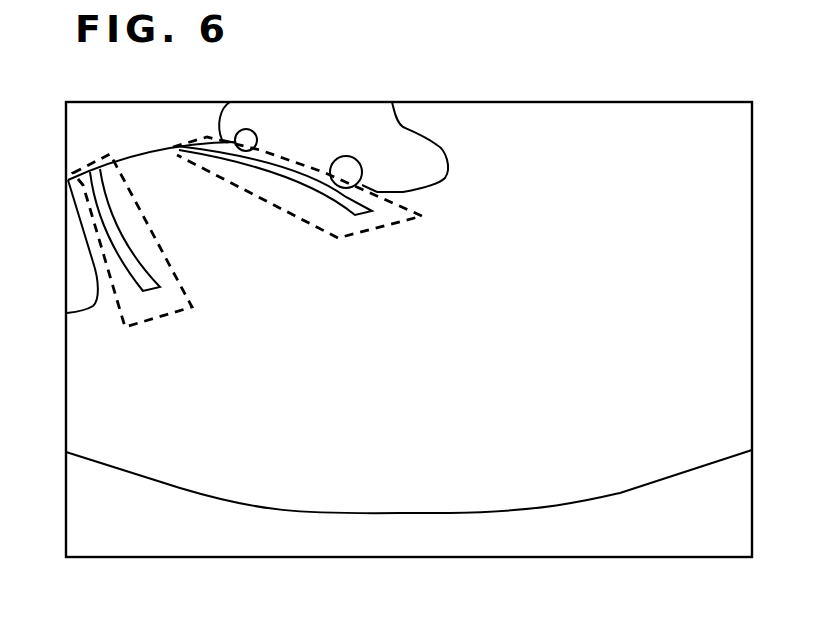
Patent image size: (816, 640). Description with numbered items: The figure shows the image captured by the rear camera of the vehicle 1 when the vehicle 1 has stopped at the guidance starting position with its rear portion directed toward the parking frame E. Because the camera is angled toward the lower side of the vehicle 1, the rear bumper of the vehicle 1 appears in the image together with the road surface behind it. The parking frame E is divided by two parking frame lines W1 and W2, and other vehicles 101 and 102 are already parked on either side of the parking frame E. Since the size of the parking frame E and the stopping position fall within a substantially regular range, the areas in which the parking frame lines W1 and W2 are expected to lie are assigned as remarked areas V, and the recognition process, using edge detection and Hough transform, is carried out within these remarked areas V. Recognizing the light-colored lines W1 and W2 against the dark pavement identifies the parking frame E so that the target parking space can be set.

The vehicle 1 is at (610, 523).
The parking frame E is at (148, 168).
The other vehicle 101 is at (427, 145).
The other vehicle 102 is at (75, 282).
The parking frame line W1 is at (335, 198).
The parking frame line W2 is at (128, 233).
The remarked area V is at (388, 227).